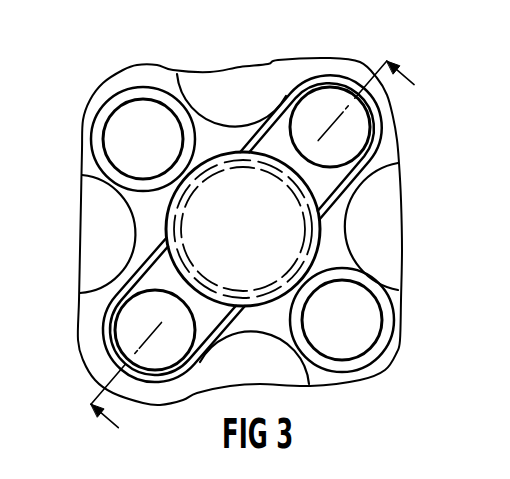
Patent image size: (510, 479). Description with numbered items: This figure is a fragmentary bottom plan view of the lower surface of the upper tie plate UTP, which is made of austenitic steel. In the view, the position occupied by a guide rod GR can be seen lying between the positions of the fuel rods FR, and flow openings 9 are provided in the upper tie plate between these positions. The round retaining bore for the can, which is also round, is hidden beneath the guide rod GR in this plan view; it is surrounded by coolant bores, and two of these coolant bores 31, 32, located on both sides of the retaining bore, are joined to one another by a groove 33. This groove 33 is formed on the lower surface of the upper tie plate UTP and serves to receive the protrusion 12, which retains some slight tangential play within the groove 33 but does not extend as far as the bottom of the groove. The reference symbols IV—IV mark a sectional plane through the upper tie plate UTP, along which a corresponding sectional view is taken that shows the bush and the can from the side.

The flow openings 9 is at (125, 117).
The protrusion 12 is at (349, 206).
The coolant bore 31 is at (115, 333).
The coolant bore 32 is at (313, 100).
The groove 33 is at (157, 277).
The upper tie plate UTP is at (387, 137).
The fuel rods FR is at (95, 207).
The guide rod GR is at (168, 223).
The sectional plane IV is at (240, 237).